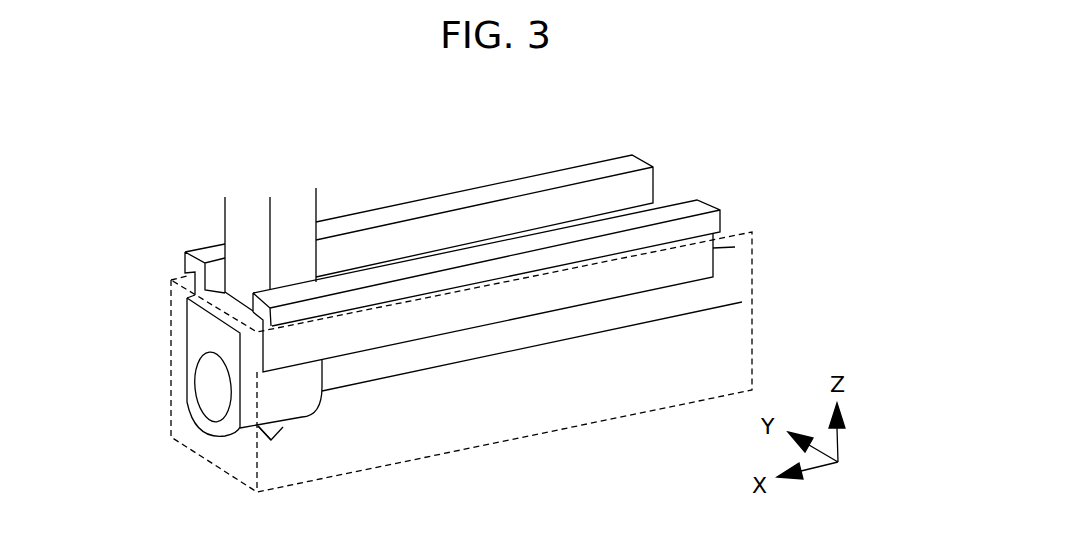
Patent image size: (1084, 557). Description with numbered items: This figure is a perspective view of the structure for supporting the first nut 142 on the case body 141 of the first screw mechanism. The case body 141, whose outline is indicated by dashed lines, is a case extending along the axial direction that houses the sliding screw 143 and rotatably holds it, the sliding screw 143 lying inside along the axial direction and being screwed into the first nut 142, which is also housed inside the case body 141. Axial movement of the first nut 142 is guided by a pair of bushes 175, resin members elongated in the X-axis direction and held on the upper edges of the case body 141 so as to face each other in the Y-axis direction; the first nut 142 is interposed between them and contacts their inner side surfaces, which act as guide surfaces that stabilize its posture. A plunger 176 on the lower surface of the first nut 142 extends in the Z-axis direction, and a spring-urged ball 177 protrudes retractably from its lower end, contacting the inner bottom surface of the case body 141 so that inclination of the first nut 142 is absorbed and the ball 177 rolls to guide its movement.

The case body 141 is at (527, 442).
The first nut 142 is at (214, 428).
The sliding screw 143 is at (390, 370).
The pair of bushes 175 is at (418, 268).
The plunger 176 is at (283, 431).
The ball 177 is at (271, 441).